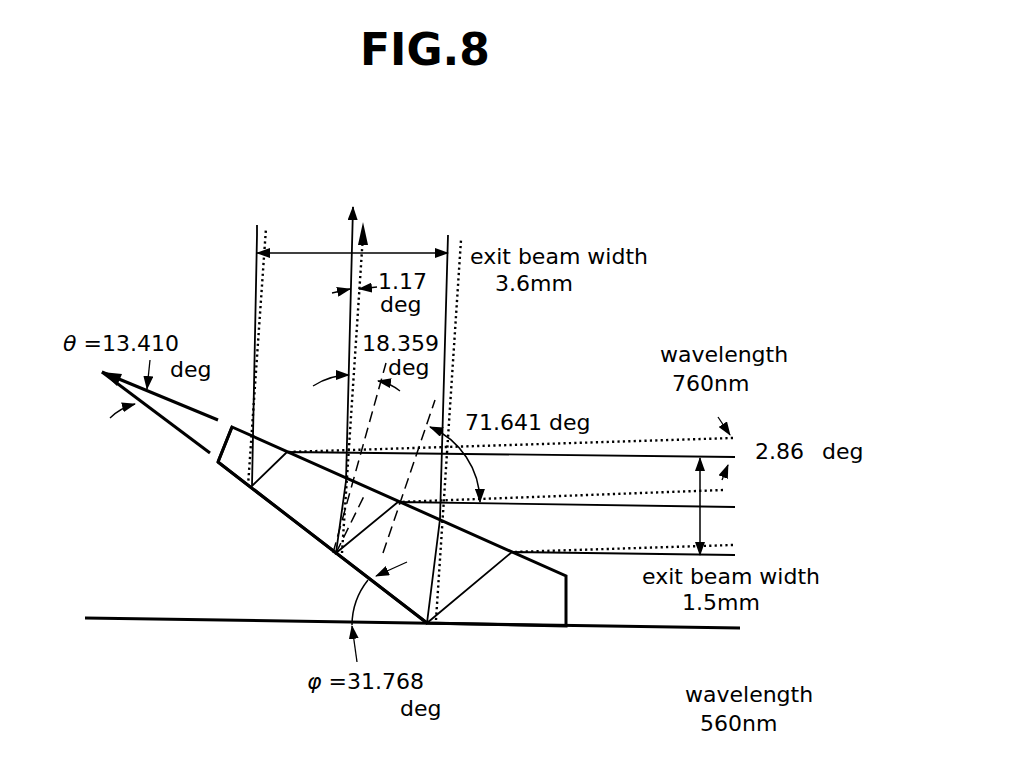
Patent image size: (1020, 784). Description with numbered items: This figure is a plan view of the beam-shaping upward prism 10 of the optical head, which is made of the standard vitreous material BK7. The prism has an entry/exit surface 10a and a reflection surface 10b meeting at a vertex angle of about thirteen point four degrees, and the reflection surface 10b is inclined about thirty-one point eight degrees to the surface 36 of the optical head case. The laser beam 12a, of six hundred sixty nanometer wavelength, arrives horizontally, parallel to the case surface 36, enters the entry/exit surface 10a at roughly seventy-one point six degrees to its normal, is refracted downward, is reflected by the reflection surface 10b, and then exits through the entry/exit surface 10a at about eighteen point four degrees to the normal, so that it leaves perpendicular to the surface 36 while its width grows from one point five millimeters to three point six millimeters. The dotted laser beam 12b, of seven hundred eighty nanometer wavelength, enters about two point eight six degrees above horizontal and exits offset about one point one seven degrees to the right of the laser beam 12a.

The beam-shaping upward prism 10 is at (548, 628).
The entry/exit surface 10a is at (233, 426).
The reflection surface 10b is at (252, 483).
The laser beam 12a is at (354, 198).
The laser beam 12b is at (575, 495).
The surface of the optical head case 36 is at (232, 622).